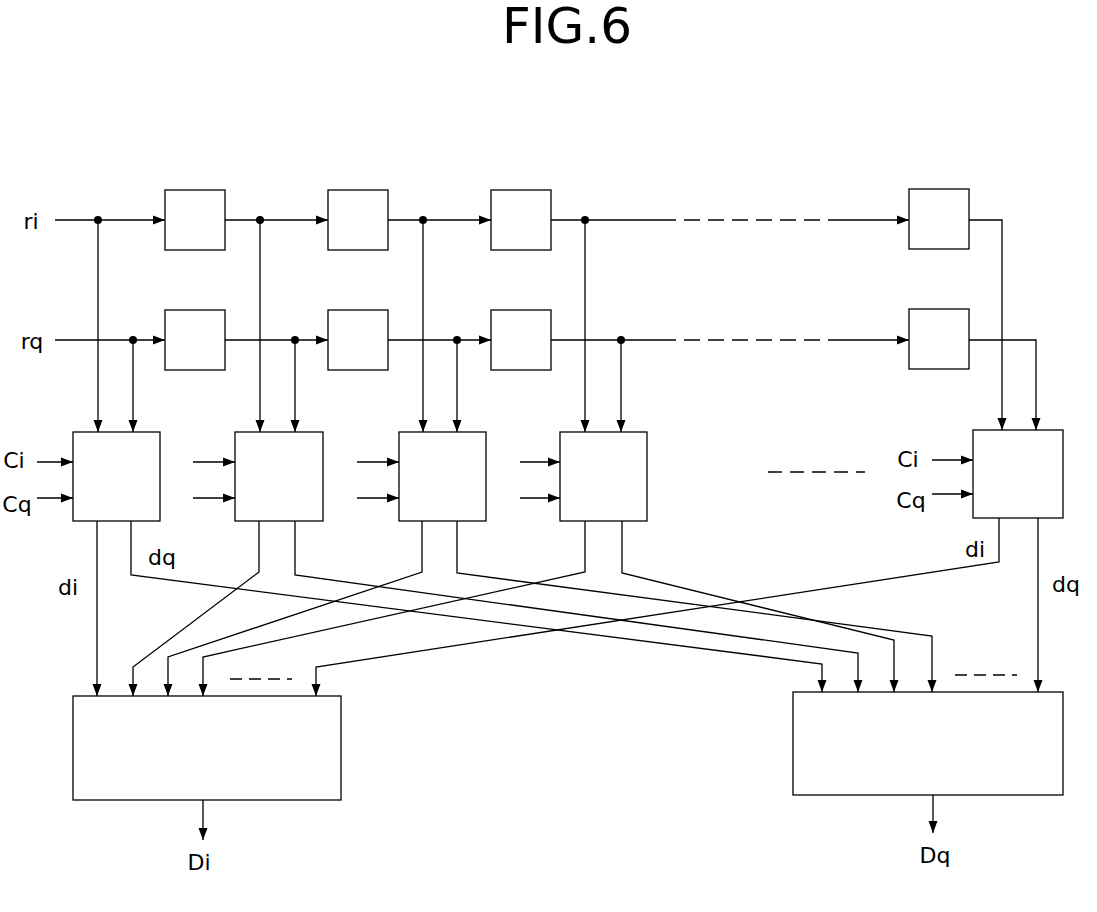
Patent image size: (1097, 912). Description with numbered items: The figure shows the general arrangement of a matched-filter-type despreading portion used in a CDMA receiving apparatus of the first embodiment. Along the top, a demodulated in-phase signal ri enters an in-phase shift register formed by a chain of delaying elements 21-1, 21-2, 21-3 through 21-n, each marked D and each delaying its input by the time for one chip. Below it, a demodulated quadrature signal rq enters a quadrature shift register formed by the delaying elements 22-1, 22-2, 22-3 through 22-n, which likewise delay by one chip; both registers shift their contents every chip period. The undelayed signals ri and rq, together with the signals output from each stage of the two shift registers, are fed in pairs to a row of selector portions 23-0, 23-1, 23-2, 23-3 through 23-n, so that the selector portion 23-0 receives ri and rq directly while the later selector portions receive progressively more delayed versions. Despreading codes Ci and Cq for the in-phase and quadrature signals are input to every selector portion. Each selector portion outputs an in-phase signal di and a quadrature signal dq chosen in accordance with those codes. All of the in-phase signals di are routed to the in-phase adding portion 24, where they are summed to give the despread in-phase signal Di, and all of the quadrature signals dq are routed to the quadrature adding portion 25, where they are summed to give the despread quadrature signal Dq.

The delaying element 21-1 is at (195, 207).
The delaying element 21-2 is at (358, 207).
The delaying element 21-3 is at (521, 207).
The delaying element 21-n is at (939, 206).
The delaying element 22-1 is at (195, 327).
The delaying element 22-2 is at (358, 327).
The delaying element 22-3 is at (521, 327).
The delaying element 22-n is at (939, 326).
The selector portion 23-0 is at (116, 476).
The selector portion 23-1 is at (279, 476).
The selector portion 23-2 is at (442, 476).
The selector portion 23-3 is at (603, 476).
The selector portion 23-n is at (1018, 474).
The in-phase adding portion 24 is at (223, 768).
The quadrature adding portion 25 is at (912, 762).